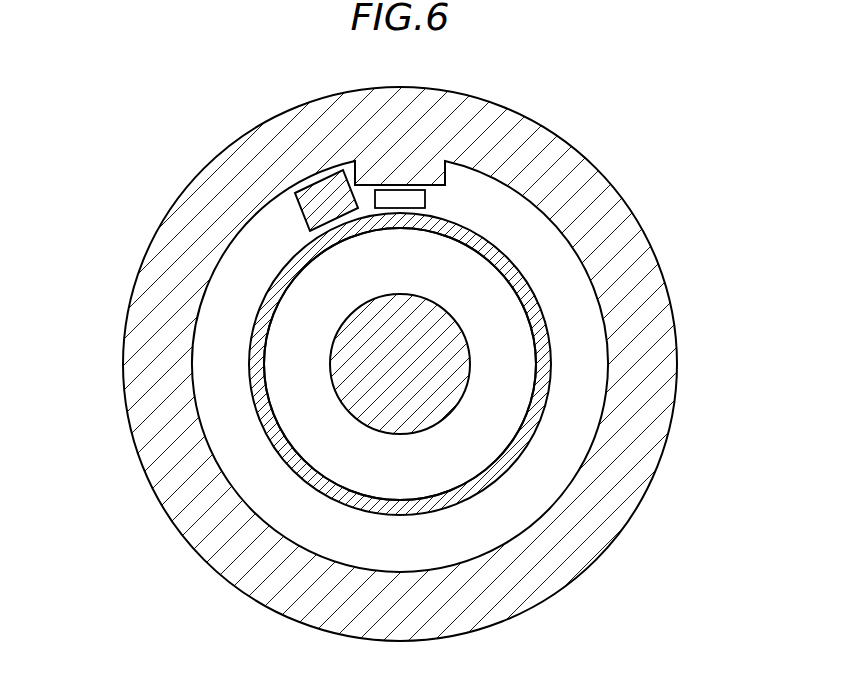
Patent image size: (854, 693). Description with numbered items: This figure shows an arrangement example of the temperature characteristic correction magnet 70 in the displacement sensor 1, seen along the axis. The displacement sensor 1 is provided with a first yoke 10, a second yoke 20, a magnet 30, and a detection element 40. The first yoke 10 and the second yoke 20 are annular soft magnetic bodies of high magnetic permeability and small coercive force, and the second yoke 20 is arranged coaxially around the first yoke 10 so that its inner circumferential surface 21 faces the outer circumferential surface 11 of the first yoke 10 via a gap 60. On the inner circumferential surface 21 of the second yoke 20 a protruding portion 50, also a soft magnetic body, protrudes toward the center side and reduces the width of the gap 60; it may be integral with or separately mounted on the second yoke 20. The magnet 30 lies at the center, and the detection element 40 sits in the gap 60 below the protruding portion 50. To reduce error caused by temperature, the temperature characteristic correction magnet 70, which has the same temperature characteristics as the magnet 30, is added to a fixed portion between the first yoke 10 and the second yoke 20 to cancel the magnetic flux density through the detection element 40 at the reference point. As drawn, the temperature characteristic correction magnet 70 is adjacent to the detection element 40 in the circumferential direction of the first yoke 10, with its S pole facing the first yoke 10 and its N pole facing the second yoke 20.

The displacement sensor 1 is at (120, 173).
The first yoke 10 is at (327, 492).
The outer circumferential surface 11 is at (482, 476).
The second yoke 20 is at (655, 335).
The inner circumferential surface 21 is at (560, 470).
The magnet 30 is at (348, 398).
The detection element 40 is at (426, 199).
The protruding portion 50 is at (420, 178).
The gap 60 is at (412, 567).
The temperature characteristic correction magnet 70 is at (308, 203).
The N pole N is at (313, 175).
The S pole S is at (340, 221).